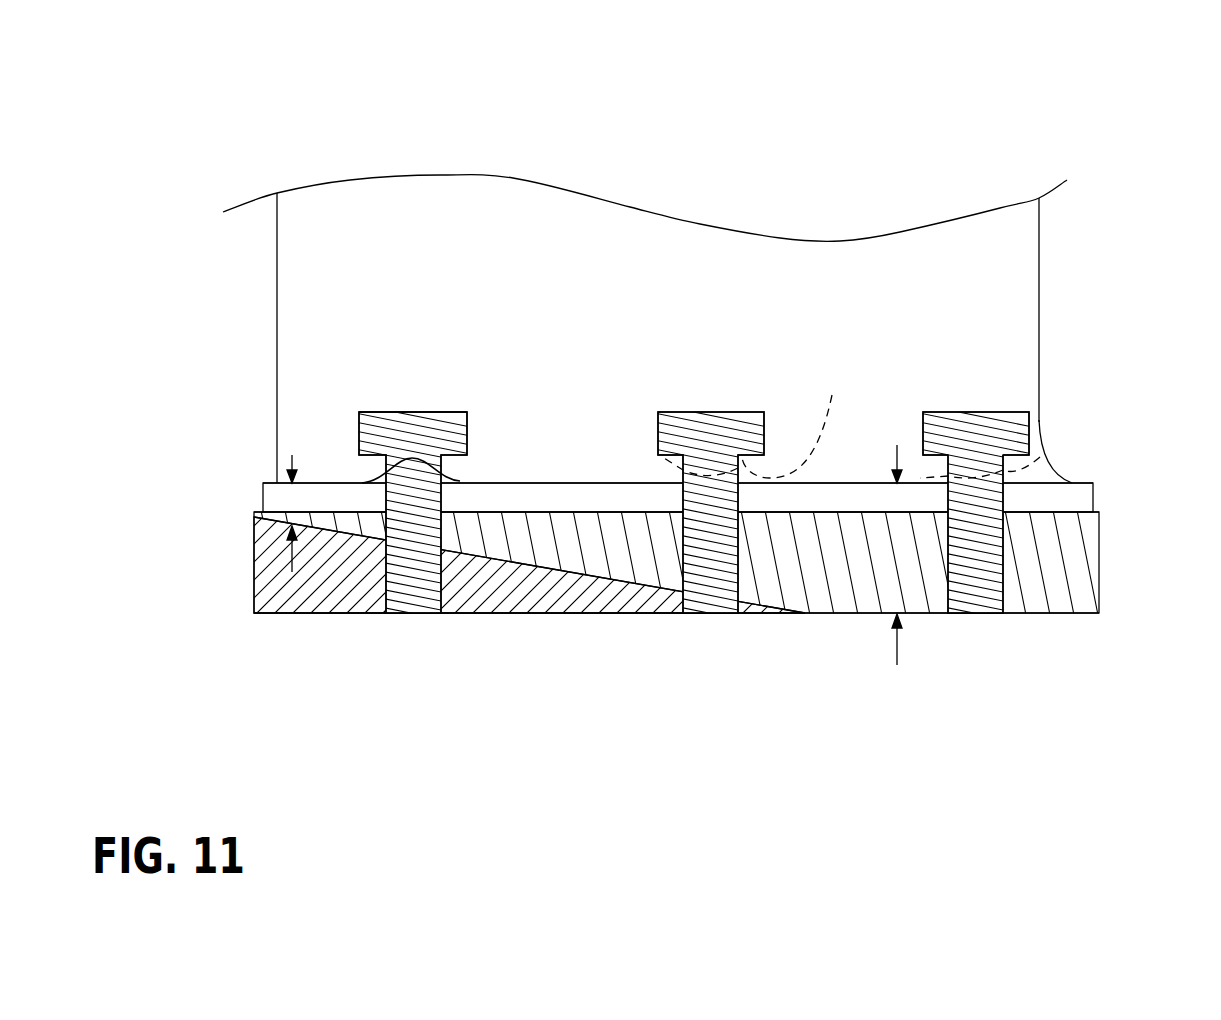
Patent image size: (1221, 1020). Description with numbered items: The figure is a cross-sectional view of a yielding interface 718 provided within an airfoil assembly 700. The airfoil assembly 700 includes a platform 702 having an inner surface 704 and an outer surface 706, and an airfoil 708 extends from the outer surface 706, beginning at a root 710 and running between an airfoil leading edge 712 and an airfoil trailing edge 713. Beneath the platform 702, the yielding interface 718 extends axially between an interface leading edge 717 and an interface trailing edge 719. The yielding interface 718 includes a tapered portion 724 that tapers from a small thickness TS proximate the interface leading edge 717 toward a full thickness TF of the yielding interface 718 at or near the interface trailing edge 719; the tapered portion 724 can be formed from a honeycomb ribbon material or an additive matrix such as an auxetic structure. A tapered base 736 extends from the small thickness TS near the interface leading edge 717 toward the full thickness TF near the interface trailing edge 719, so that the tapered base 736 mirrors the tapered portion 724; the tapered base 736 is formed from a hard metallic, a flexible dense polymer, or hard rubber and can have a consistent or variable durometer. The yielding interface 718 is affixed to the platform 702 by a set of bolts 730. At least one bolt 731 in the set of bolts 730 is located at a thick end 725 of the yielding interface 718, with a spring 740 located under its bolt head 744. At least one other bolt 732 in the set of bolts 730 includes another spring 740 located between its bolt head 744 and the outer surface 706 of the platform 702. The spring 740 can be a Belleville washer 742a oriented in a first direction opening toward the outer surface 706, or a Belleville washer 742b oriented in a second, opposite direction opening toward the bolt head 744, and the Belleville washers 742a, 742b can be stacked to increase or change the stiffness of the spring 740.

The airfoil assembly 700 is at (252, 230).
The platform 702 is at (325, 492).
The inner surface 704 is at (513, 513).
The outer surface 706 is at (553, 488).
The airfoil 708 is at (970, 272).
The root 710 is at (1070, 481).
The airfoil leading edge 712 is at (277, 280).
The airfoil trailing edge 713 is at (1039, 317).
The interface leading edge 717 is at (254, 566).
The yielding interface 718 is at (497, 622).
The interface trailing edge 719 is at (1099, 562).
The tapered portion 724 is at (1027, 580).
The thick end 725 is at (1087, 527).
The set of bolts 730 is at (675, 400).
The bolt 731 is at (1002, 423).
The bolt 732 is at (435, 435).
The tapered base 736 is at (337, 588).
The spring 740 is at (362, 478).
The Belleville washer 742a is at (1040, 457).
The Belleville washer 742b is at (832, 395).
The bolt head 744 is at (407, 418).
The small thickness TS is at (295, 555).
The full thickness TF is at (897, 650).